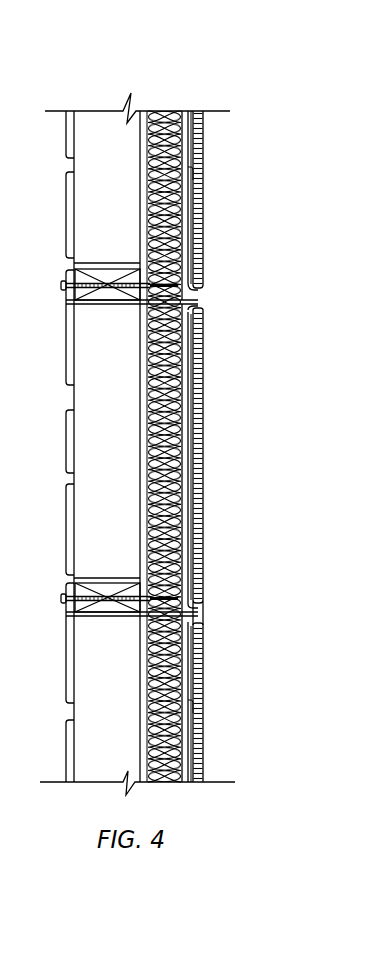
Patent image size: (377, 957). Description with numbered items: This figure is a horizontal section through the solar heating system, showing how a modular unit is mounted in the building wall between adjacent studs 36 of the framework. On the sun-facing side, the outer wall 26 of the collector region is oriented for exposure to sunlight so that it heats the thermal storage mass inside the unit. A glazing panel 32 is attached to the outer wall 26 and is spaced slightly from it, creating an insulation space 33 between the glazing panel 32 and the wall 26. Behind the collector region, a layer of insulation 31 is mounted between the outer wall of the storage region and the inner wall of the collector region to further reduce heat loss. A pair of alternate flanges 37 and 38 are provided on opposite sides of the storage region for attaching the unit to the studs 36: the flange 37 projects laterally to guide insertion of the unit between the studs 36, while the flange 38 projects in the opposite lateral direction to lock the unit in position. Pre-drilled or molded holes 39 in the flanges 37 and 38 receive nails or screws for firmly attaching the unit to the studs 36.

The outer wall of the collector region 26 is at (186, 283).
The layer of insulation 31 is at (168, 122).
The glazing panel 32 is at (202, 240).
The insulation space 33 is at (203, 200).
The stud 36 is at (105, 277).
The flange 37 is at (182, 573).
The flange 38 is at (66, 306).
The holes 39 is at (66, 286).